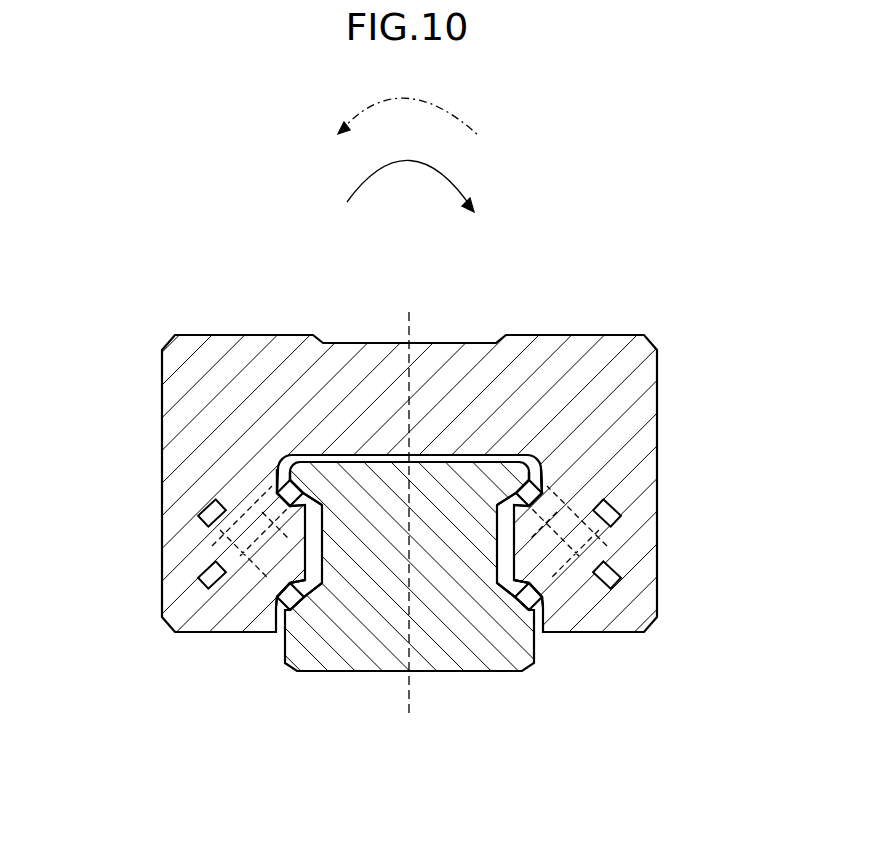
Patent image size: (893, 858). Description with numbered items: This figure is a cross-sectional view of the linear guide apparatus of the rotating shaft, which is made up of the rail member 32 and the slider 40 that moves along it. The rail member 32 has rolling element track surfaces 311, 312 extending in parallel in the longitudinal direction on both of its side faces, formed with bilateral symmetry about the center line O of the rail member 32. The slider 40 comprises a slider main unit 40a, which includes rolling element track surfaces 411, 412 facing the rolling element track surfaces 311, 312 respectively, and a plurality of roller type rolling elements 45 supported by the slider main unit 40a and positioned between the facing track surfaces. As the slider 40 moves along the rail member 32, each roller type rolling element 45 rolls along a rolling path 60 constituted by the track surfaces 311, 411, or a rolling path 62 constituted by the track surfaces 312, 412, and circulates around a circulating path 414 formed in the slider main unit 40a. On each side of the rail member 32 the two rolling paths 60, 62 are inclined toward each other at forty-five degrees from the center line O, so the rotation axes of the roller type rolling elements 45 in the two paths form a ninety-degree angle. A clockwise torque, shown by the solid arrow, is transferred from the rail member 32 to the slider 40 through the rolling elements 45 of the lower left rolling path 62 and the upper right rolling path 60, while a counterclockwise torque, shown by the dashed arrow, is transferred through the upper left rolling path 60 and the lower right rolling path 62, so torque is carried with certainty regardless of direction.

The slider 40 is at (660, 398).
The slider main unit 40a is at (385, 372).
The rail member 32 is at (377, 657).
The roller type rolling element 45 is at (296, 493).
The rolling path 60 is at (182, 268).
The rolling path 62 is at (180, 734).
The rolling element track surface 311 is at (298, 492).
The rolling element track surface 312 is at (290, 608).
The rolling element track surface 411 is at (275, 495).
The rolling element track surface 412 is at (280, 590).
The circulating path 414 is at (208, 541).
The center line O is at (408, 529).